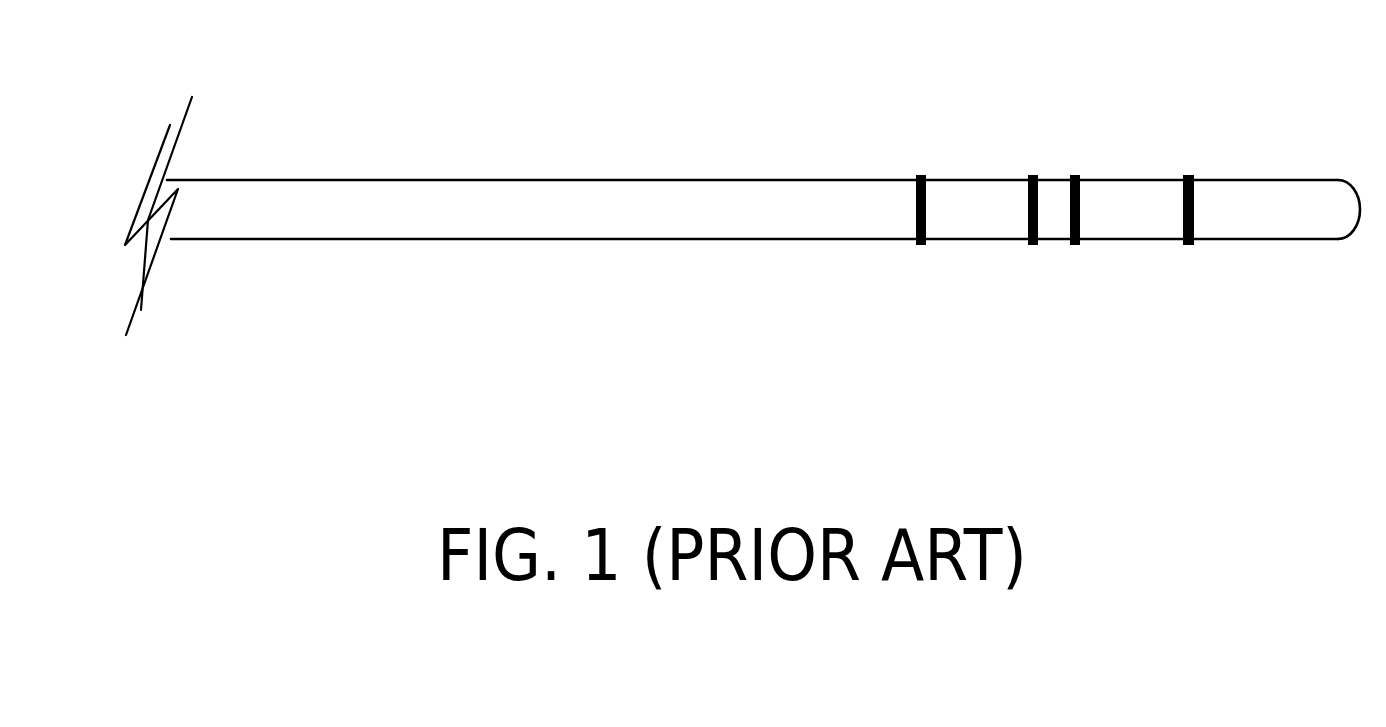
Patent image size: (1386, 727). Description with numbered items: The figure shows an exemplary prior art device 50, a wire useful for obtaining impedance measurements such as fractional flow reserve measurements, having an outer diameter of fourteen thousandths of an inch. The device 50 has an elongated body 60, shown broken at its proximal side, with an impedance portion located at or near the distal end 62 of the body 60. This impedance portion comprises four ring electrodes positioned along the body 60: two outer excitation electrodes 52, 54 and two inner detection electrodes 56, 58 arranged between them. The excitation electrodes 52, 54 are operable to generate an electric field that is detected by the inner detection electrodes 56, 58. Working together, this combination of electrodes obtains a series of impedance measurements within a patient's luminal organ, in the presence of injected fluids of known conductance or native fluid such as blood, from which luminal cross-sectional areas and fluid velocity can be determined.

The prior art device 50 is at (495, 138).
The outer excitation electrode 52 is at (1188, 175).
The outer excitation electrode 54 is at (920, 176).
The inner detection electrode 56 is at (1075, 176).
The inner detection electrode 58 is at (1033, 176).
The body 60 is at (230, 200).
The distal end 62 is at (1202, 270).